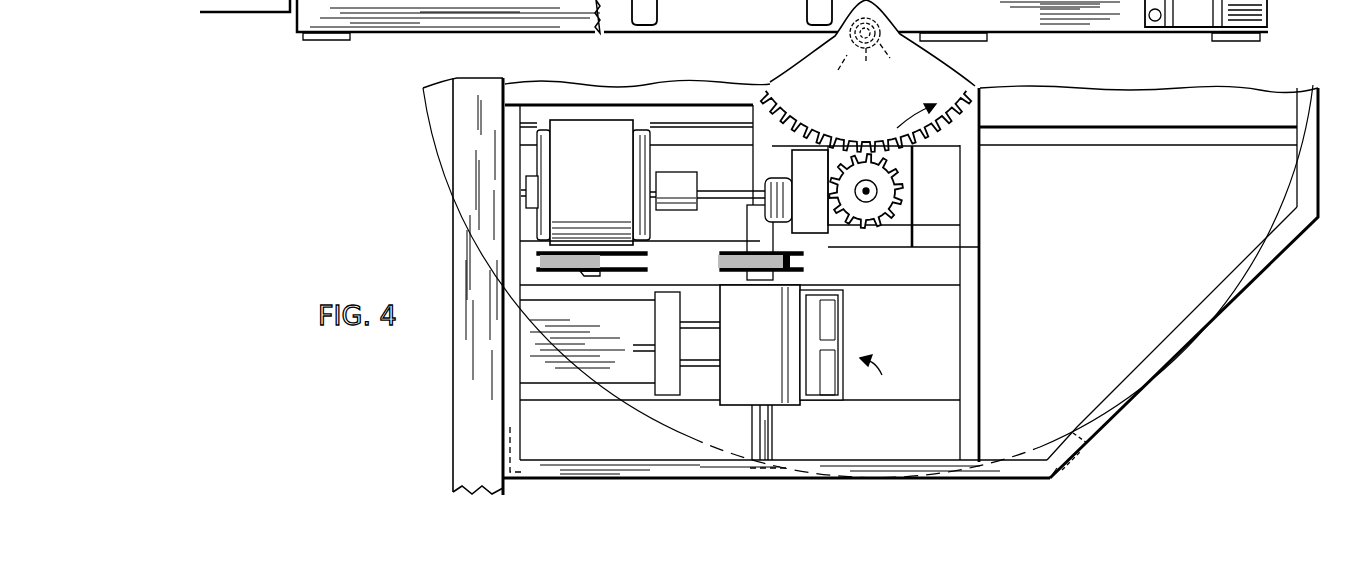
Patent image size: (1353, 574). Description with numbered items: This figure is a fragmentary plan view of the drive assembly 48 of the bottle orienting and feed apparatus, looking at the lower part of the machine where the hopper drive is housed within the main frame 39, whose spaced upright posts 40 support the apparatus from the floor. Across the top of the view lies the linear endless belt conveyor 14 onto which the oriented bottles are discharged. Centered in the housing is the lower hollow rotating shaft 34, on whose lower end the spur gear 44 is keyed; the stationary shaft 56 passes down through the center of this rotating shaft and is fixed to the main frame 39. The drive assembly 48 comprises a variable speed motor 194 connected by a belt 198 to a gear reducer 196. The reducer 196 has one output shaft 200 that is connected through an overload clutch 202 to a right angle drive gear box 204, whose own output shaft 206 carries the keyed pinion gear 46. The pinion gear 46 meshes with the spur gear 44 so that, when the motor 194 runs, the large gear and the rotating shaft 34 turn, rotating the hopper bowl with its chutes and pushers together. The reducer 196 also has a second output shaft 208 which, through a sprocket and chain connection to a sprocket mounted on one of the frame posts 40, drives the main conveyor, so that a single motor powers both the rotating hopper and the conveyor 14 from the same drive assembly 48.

The linear endless belt conveyor 14 is at (481, 452).
The lower hollow rotating shaft 34 is at (872, 44).
The stationary shaft 56 is at (877, 58).
The spur gear 44 is at (950, 93).
The main frame 39 is at (958, 338).
The upright posts 40 is at (1285, 245).
The gear reducer 196 is at (602, 147).
The second output shaft 208 is at (540, 186).
The output shaft 200 is at (655, 185).
The overload clutch 202 is at (824, 195).
The right angle drive gear box 204 is at (910, 215).
The pinion gear 46 is at (880, 190).
The output shaft 206 is at (868, 197).
The belt 198 is at (668, 262).
The variable speed motor 194 is at (770, 343).
The drive assembly 48 is at (883, 371).